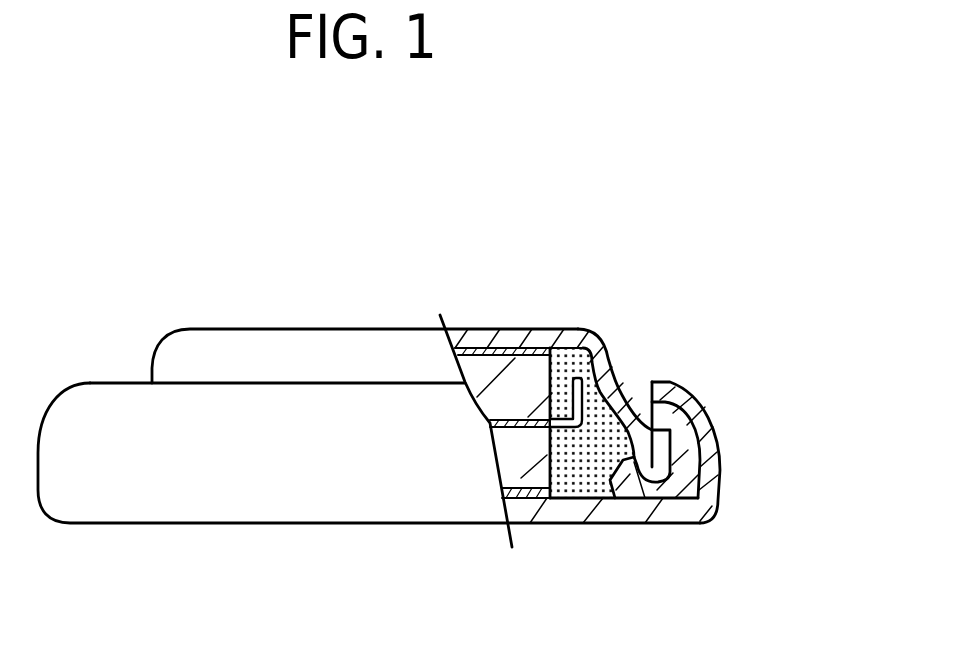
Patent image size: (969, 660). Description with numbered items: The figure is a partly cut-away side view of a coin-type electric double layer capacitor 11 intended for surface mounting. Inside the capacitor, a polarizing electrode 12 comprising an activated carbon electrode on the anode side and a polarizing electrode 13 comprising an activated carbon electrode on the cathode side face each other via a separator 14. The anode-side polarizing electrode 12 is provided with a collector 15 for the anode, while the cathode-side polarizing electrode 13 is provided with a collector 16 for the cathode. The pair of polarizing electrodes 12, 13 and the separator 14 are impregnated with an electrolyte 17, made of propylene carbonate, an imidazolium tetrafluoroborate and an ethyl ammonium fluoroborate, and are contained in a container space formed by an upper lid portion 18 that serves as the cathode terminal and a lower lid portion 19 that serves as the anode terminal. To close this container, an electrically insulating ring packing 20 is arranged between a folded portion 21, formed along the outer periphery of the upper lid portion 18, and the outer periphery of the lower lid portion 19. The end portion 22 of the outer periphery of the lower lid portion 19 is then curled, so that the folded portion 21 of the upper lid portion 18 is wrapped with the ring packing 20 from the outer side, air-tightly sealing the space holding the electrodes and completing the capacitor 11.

The coin-type electric double layer capacitor 11 is at (78, 527).
The polarizing electrode 12 is at (512, 462).
The polarizing electrode 13 is at (523, 380).
The separator 14 is at (568, 365).
The collector 15 is at (540, 500).
The collector 16 is at (513, 350).
The electrolyte 17 is at (597, 433).
The upper lid portion 18 is at (462, 335).
The lower lid portion 19 is at (632, 513).
The ring packing 20 is at (682, 480).
The folded portion 21 is at (663, 457).
The end portion 22 is at (683, 407).